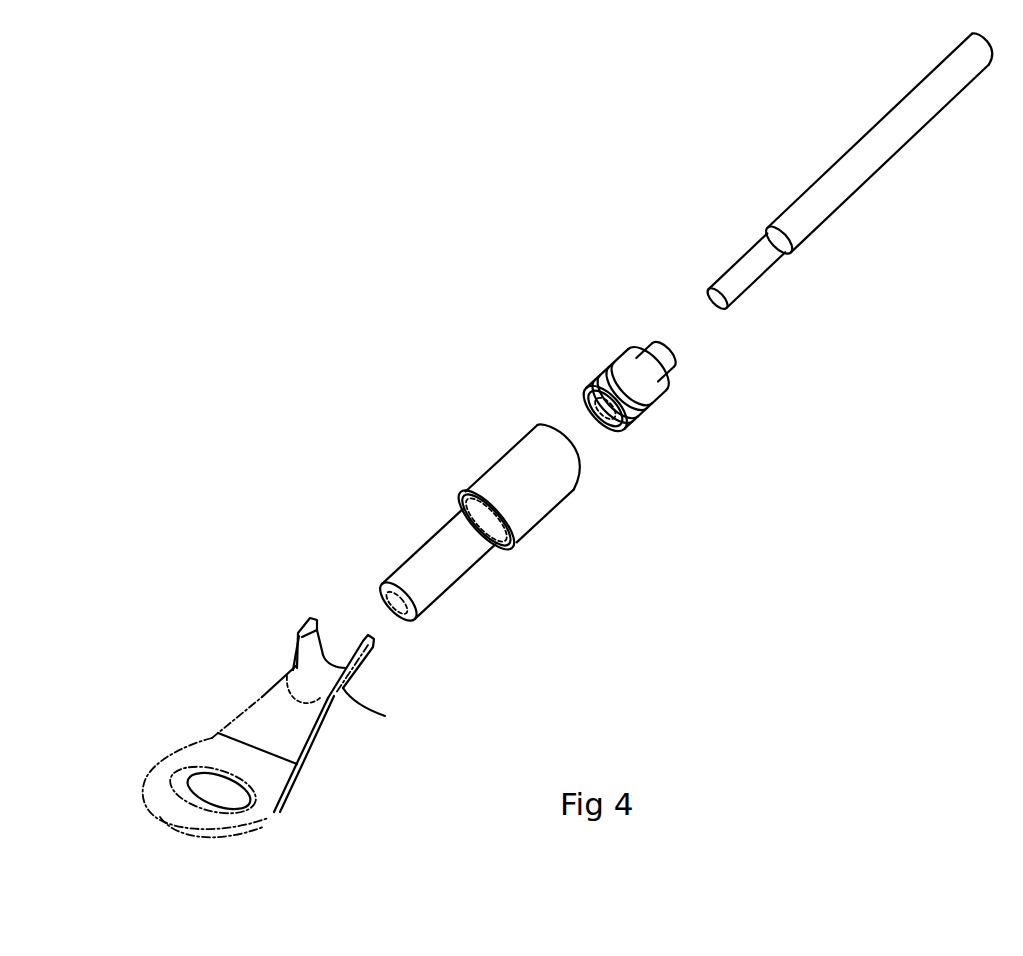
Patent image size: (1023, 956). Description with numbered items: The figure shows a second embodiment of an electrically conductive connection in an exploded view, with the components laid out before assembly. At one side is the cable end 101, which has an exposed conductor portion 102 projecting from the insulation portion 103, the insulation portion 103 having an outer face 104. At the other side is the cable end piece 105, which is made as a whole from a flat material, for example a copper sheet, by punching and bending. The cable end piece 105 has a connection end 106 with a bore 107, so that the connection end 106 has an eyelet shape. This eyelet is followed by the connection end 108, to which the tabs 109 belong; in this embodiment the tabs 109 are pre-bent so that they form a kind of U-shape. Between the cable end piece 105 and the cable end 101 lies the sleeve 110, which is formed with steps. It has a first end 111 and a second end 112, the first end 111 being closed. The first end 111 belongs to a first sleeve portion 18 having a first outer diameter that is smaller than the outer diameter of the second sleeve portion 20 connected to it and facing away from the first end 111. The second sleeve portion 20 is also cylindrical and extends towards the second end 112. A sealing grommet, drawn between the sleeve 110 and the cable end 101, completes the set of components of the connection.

The cable end 101 is at (851, 204).
The exposed conductor portion 102 is at (738, 288).
The insulation portion 103 is at (787, 253).
The outer face 104 is at (868, 172).
The cable end piece 105 is at (296, 701).
The connection end 106 is at (160, 791).
The bore 107 is at (188, 779).
The connection end 108 is at (385, 716).
The tabs 109 is at (320, 622).
The sleeve 110 is at (515, 512).
The first end 111 is at (397, 613).
The first sleeve portion 18 is at (424, 550).
The second sleeve portion 20 is at (545, 498).
The second end 112 is at (585, 456).